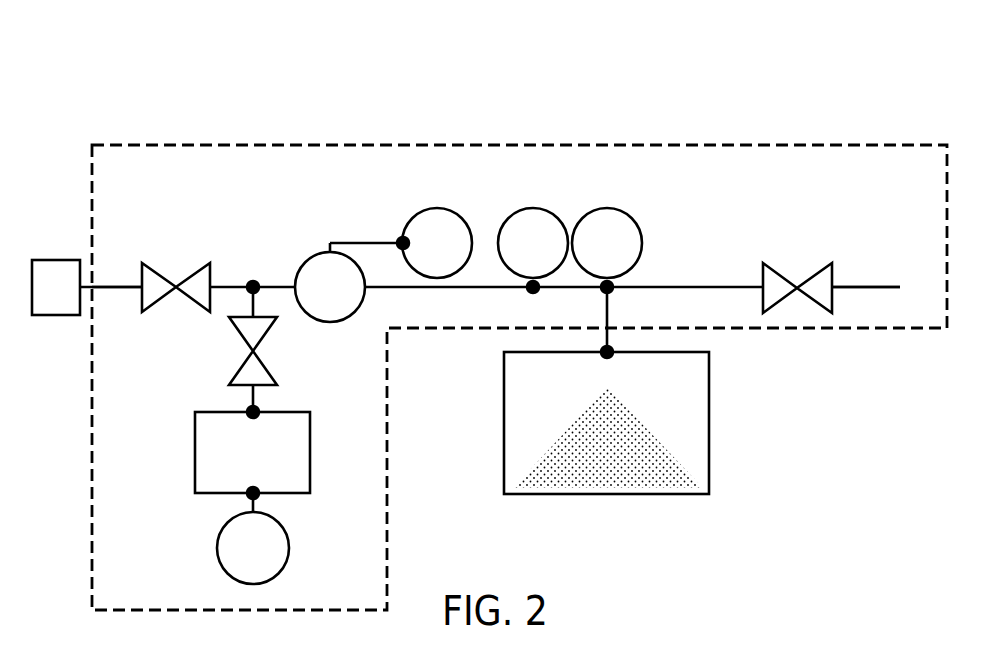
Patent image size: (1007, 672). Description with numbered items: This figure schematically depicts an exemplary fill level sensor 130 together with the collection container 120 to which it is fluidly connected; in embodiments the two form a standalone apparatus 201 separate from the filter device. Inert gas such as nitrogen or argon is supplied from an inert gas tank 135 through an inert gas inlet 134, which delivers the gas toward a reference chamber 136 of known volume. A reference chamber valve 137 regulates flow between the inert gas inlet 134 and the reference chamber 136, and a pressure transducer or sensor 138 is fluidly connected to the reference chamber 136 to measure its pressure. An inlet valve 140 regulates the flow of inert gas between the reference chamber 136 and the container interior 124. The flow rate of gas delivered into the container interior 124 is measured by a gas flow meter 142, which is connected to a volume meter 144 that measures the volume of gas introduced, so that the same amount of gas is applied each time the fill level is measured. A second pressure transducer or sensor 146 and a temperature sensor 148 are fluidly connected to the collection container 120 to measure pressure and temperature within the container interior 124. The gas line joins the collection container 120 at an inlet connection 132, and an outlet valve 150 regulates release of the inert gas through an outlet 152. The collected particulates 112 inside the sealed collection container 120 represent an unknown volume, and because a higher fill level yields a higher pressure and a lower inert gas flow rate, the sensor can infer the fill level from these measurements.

The fill level sensor 130 is at (519, 309).
The standalone apparatus 201 is at (821, 43).
The inert gas tank 135 is at (55, 316).
The inert gas inlet 134 is at (108, 287).
The inlet valve 140 is at (195, 272).
The gas flow meter 142 is at (309, 261).
The volume meter 144 is at (431, 208).
The second pressure transducer or sensor 146 is at (527, 208).
The temperature sensor 148 is at (601, 208).
The outlet valve 150 is at (814, 273).
The outlet 152 is at (893, 287).
The inlet connection 132 is at (612, 345).
The reference chamber valve 137 is at (268, 333).
The reference chamber 136 is at (311, 455).
The pressure transducer or sensor 138 is at (290, 549).
The collection container 120 is at (503, 422).
The collected particulates 112 is at (597, 412).
The container interior 124 is at (651, 437).